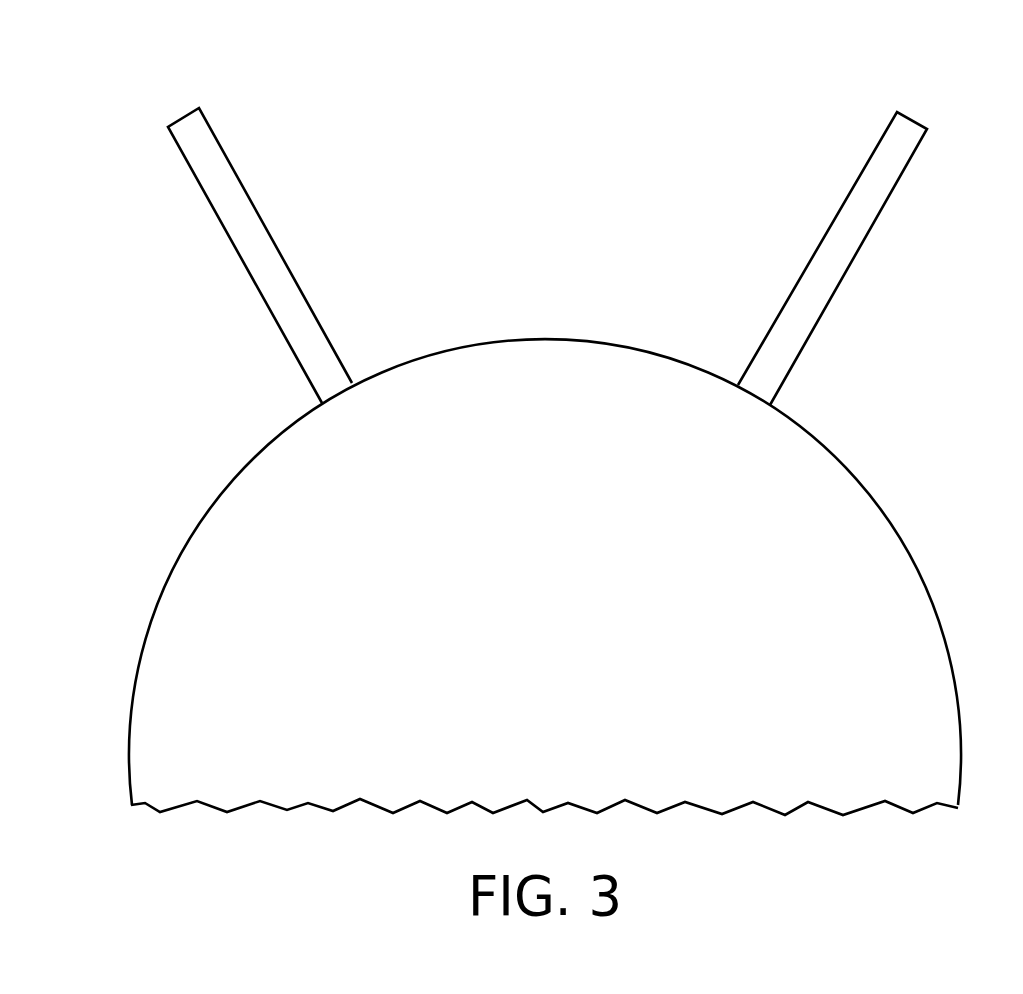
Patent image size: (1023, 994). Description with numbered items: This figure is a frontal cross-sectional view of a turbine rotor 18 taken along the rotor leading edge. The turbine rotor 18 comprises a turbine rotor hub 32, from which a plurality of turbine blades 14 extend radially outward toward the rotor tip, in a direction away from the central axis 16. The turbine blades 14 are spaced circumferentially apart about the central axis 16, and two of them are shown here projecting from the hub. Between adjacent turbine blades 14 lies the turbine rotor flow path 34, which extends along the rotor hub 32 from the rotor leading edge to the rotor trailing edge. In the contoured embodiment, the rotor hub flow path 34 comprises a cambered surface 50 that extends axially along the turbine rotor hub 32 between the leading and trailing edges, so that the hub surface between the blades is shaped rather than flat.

The turbine blades 14 is at (240, 178).
The central axis 16 is at (544, 760).
The turbine rotor 18 is at (572, 544).
The turbine rotor hub 32 is at (508, 427).
The turbine rotor flow path 34 is at (580, 152).
The cambered surface 50 is at (588, 338).